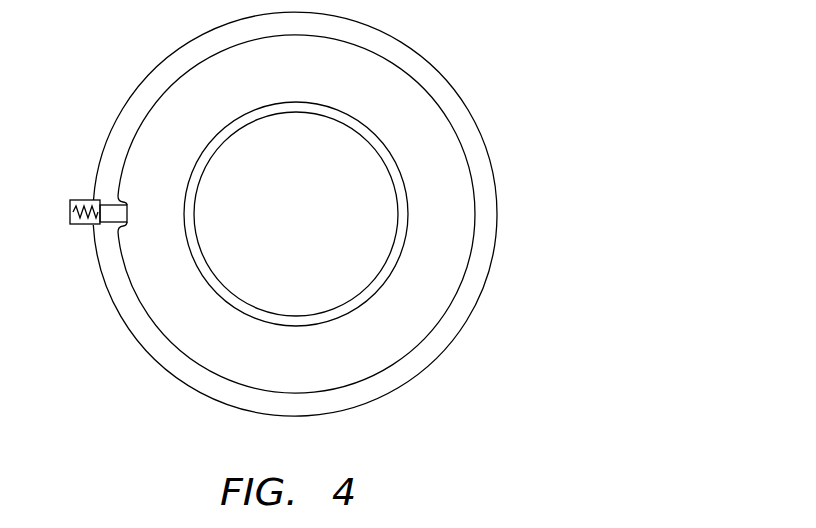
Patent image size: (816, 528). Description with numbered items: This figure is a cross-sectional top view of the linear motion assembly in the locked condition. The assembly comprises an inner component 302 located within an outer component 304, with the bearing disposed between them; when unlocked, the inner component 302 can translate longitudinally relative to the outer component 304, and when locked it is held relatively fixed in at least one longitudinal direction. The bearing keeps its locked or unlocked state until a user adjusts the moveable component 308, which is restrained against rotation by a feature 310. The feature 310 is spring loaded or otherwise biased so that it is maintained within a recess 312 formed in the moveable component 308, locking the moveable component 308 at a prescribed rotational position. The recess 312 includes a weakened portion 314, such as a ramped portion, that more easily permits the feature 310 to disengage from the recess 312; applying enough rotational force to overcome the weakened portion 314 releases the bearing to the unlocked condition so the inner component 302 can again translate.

The inner component 302 is at (315, 224).
The outer component 304 is at (437, 358).
The moveable component 308 is at (315, 366).
The feature 310 is at (100, 203).
The recess 312 is at (123, 230).
The weakened portion 314 is at (127, 197).